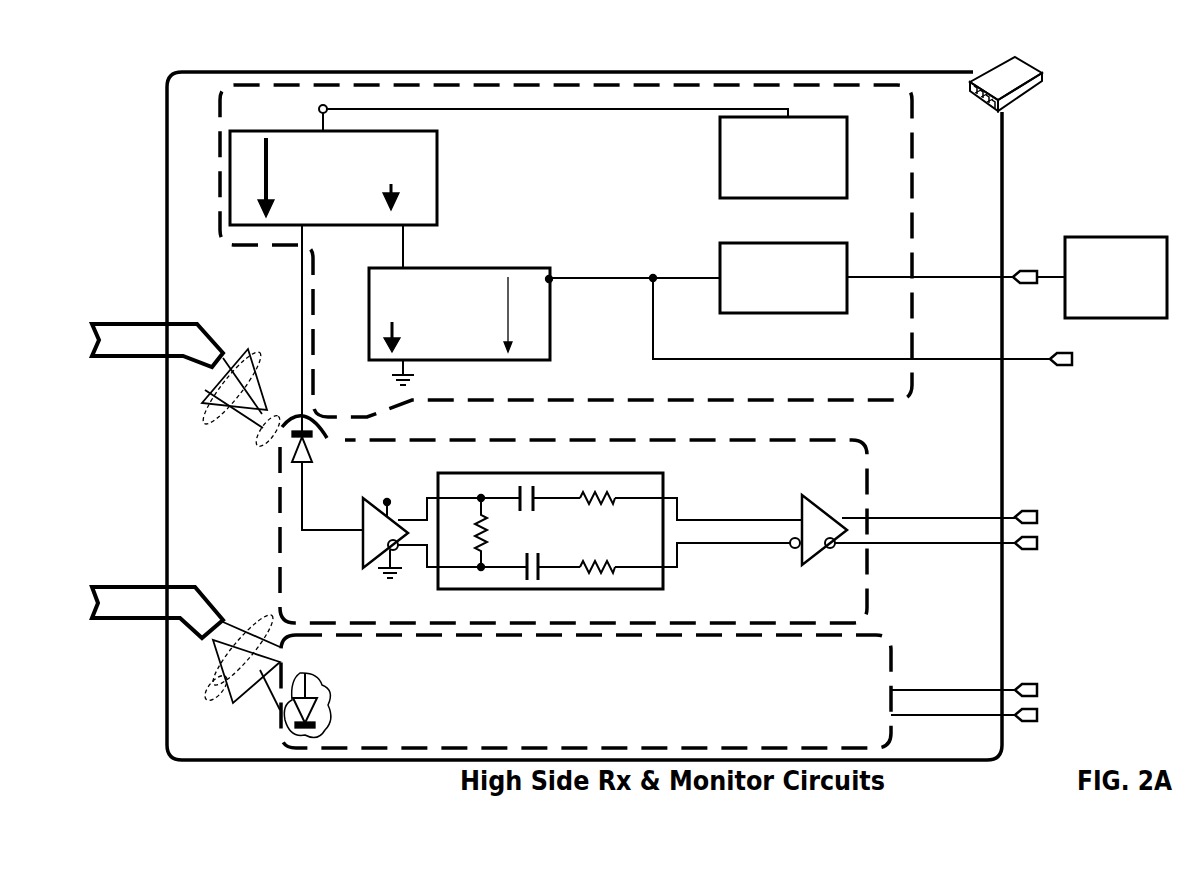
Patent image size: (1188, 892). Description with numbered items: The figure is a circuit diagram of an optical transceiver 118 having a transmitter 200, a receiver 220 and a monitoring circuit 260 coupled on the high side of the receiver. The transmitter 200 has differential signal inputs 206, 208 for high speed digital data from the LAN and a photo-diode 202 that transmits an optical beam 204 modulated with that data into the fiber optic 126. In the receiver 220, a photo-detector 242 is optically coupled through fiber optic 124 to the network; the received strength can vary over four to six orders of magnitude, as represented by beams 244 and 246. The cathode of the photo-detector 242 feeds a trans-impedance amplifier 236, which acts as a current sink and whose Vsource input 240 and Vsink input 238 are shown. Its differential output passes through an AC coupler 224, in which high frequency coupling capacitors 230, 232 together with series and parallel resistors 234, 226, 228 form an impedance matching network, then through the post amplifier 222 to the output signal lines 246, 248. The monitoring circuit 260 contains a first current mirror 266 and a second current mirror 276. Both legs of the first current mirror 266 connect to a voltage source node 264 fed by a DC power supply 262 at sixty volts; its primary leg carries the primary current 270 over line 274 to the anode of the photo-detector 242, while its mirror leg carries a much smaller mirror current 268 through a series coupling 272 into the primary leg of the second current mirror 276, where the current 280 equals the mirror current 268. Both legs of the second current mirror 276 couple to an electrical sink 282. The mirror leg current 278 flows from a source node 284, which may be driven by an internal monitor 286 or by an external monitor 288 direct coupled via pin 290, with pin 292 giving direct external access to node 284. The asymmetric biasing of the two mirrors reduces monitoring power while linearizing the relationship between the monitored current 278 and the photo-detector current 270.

The optical transceiver 118 is at (1002, 145).
The fiber optic 124 is at (152, 323).
The fiber optic 126 is at (152, 587).
The transmitter 200 is at (887, 637).
The photo-diode 202 is at (325, 702).
The optical beam 204 is at (213, 685).
The differential signal input 206 is at (1020, 684).
The differential signal input 208 is at (1020, 721).
The receiver 220 is at (867, 448).
The post amplifier 222 is at (812, 497).
The AC coupler 224 is at (664, 472).
The resistor 226 is at (603, 505).
The resistor 228 is at (605, 560).
The high frequency coupling capacitor 230 is at (538, 553).
The high frequency coupling capacitor 232 is at (522, 512).
The resistor 234 is at (475, 537).
The trans-impedance amplifier 236 is at (362, 557).
The Vsink input 238 is at (396, 574).
The Vsource input 240 is at (389, 500).
The photo-detector 242 is at (313, 460).
The beam 244 is at (262, 440).
The beam / signal line 246 is at (212, 420).
The signal line 248 is at (1020, 549).
The monitoring circuit 260 is at (912, 110).
The DC power supply 262 is at (720, 177).
The voltage source node 264 is at (319, 109).
The first current mirror 266 is at (437, 197).
The mirror current 268 is at (398, 205).
The primary current 270 is at (270, 208).
The series coupling 272 is at (404, 252).
The line 274 is at (300, 278).
The second current mirror 276 is at (488, 362).
The current 278 is at (511, 346).
The current 280 is at (394, 347).
The electrical sink 282 is at (410, 380).
The source node 284 is at (653, 274).
The internal monitor 286 is at (740, 313).
The external monitor 288 is at (1112, 237).
The pin 290 is at (1023, 270).
The pin 292 is at (1058, 365).